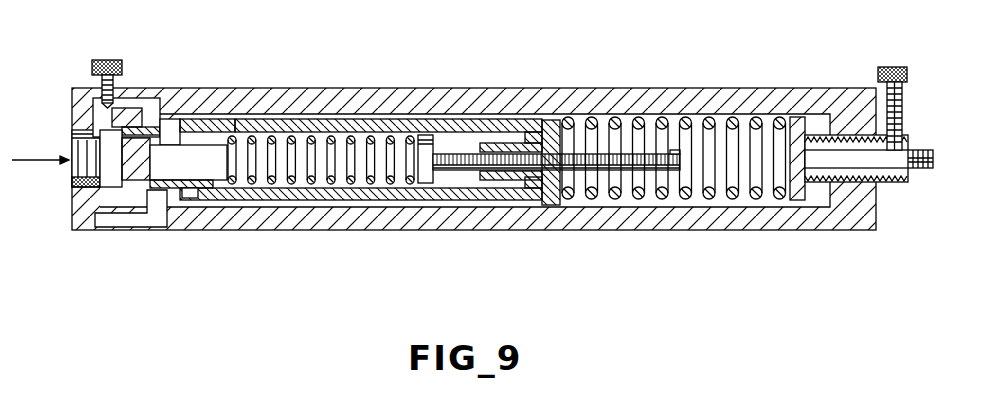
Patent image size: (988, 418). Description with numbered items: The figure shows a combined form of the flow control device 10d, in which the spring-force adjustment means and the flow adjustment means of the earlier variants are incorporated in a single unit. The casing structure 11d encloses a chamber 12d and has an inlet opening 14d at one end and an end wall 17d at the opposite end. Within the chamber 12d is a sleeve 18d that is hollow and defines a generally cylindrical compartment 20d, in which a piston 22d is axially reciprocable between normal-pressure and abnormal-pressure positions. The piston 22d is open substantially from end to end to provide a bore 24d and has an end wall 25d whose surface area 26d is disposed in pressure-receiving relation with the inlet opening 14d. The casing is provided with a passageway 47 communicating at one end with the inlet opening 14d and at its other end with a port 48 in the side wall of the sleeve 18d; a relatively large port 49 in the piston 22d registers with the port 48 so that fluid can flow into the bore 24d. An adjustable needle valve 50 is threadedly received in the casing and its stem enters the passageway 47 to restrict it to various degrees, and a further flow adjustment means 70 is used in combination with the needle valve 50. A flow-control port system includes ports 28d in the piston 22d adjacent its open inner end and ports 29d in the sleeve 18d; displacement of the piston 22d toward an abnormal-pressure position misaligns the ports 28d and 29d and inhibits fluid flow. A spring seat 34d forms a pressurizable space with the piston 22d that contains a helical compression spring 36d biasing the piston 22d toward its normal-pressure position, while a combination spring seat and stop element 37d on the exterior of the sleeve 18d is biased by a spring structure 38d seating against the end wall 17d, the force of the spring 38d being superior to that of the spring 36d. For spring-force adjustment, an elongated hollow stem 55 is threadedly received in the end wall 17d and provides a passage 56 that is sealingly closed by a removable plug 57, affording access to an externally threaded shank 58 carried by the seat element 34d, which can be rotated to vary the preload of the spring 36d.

The control device 10d is at (490, 78).
The casing structure 11d is at (428, 88).
The chamber 12d is at (718, 200).
The inlet opening 14d is at (78, 166).
The end wall 17d is at (850, 200).
The sleeve 18d is at (357, 127).
The compartment 20d is at (348, 176).
The piston 22d is at (217, 141).
The bore 24d is at (198, 160).
The end wall 25d is at (140, 170).
The surface area 26d is at (143, 168).
The ports 28d is at (204, 183).
The ports 29d is at (190, 197).
The spring seat 34d is at (428, 183).
The helical compression spring 36d is at (307, 138).
The combination spring seat and stop element 37d is at (567, 200).
The spring structure 38d is at (633, 118).
The passageway 47 is at (128, 100).
The port 48 is at (155, 128).
The port 49 is at (172, 134).
The adjustable needle valve 50 is at (97, 62).
The hollow stem 55 is at (842, 138).
The passage 56 is at (876, 160).
The removable plug 57 is at (937, 148).
The threaded shank 58 is at (551, 148).
The flow adjustment means 70 is at (893, 66).